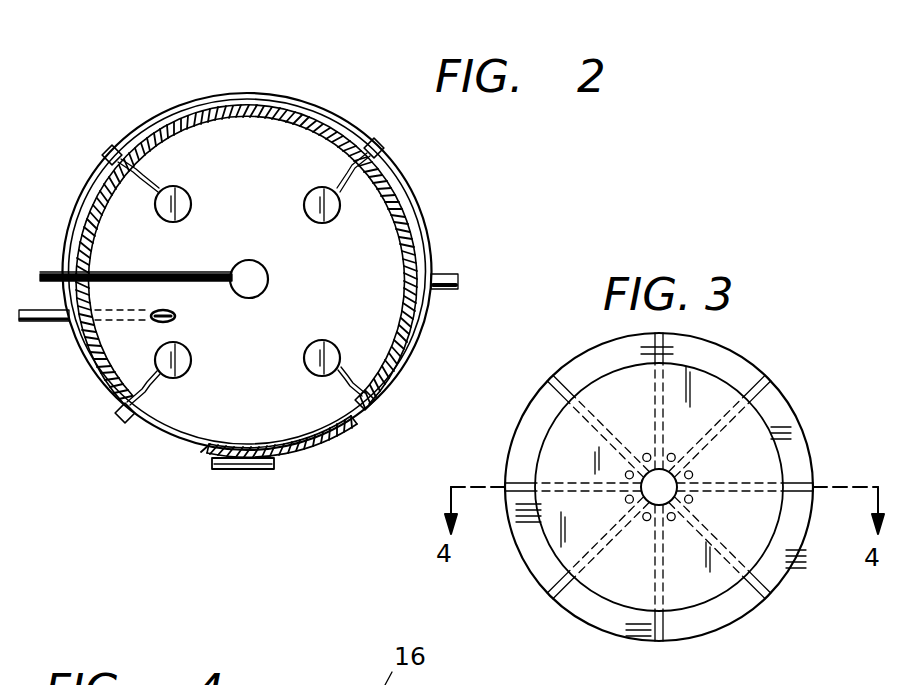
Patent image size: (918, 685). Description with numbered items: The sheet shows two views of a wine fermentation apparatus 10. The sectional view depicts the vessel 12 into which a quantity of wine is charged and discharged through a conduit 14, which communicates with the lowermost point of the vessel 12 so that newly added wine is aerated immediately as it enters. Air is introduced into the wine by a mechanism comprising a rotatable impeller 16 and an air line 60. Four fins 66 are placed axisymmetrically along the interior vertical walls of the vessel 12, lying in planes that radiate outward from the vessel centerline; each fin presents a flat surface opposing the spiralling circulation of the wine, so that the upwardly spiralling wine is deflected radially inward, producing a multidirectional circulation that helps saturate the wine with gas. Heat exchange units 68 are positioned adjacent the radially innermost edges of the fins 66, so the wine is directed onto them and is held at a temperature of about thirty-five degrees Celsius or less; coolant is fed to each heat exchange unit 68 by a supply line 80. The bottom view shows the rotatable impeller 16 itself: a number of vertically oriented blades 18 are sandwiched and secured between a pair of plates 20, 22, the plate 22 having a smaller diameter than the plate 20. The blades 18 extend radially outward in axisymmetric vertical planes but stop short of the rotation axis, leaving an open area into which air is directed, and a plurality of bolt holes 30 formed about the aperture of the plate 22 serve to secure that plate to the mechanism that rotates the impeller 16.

In FIG. 2, the fermentation apparatus 10 is at (115, 102).
In FIG. 2, the vessel 12 is at (160, 443).
In FIG. 2, the conduit 14 is at (37, 323).
In FIG. 2, the rotatable impeller 16 is at (270, 279).
In FIG. 3, the rotatable impeller 16 is at (766, 350).
In FIG. 3, the blades 18 is at (568, 380).
In FIG. 3, the plate 20 is at (735, 625).
In FIG. 3, the plate 22 is at (742, 457).
In FIG. 3, the bolt holes 30 is at (669, 452).
In FIG. 2, the air line 60 is at (163, 275).
In FIG. 2, the fins 66 is at (146, 176).
In FIG. 2, the heat exchange units 68 is at (192, 205).
In FIG. 2, the supply line 80 is at (430, 222).